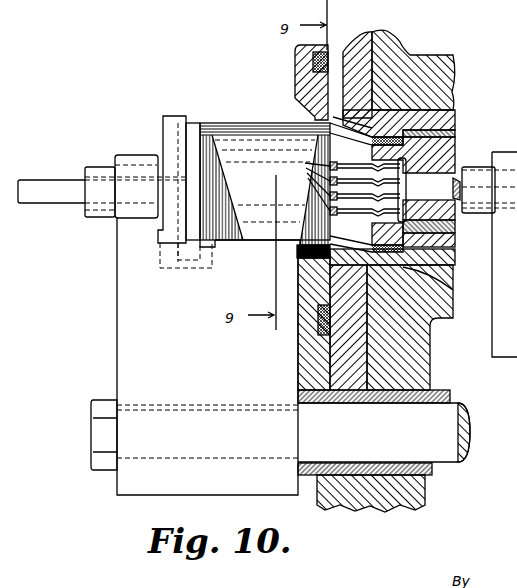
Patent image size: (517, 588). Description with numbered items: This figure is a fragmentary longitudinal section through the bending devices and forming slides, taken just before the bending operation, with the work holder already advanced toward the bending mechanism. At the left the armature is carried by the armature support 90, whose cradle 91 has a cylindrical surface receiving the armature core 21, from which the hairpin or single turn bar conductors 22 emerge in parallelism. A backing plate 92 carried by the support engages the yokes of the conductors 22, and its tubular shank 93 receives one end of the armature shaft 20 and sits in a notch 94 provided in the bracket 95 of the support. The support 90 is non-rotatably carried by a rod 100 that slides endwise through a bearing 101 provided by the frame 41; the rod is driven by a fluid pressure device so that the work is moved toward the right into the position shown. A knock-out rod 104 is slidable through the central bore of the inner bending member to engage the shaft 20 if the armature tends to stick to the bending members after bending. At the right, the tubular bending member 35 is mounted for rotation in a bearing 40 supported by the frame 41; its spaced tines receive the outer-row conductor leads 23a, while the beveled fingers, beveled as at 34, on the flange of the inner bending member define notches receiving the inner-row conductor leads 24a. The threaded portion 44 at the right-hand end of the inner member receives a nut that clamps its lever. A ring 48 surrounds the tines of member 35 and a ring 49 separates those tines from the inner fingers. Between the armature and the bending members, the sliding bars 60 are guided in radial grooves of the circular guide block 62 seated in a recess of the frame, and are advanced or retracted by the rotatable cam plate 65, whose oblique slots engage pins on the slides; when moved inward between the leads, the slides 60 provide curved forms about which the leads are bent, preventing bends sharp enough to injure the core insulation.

The armature shaft 20 is at (54, 184).
The core 21 is at (237, 123).
The hairpin or single turn bar conductor 22 is at (191, 124).
The conductor lead 23a is at (456, 128).
The conductor lead 24a is at (455, 142).
The bevel 34 is at (372, 166).
The tubular bending member 35 is at (405, 182).
The bearing 40 is at (455, 99).
The frame 41 is at (428, 305).
The threaded portion 44 is at (368, 245).
The ring 48 is at (397, 133).
The ring 49 is at (393, 108).
The sliding bar 60 is at (332, 88).
The circular guide block 62 is at (352, 340).
The rotatable cam plate 65 is at (296, 55).
The armature support 90 is at (121, 370).
The cradle 91 is at (237, 258).
The backing plate 92 is at (171, 118).
The tubular shank 93 is at (93, 168).
The notch 94 is at (133, 165).
The bracket 95 is at (123, 256).
The rod 100 is at (444, 411).
The bearing 101 is at (431, 390).
The knock-out rod 104 is at (441, 180).